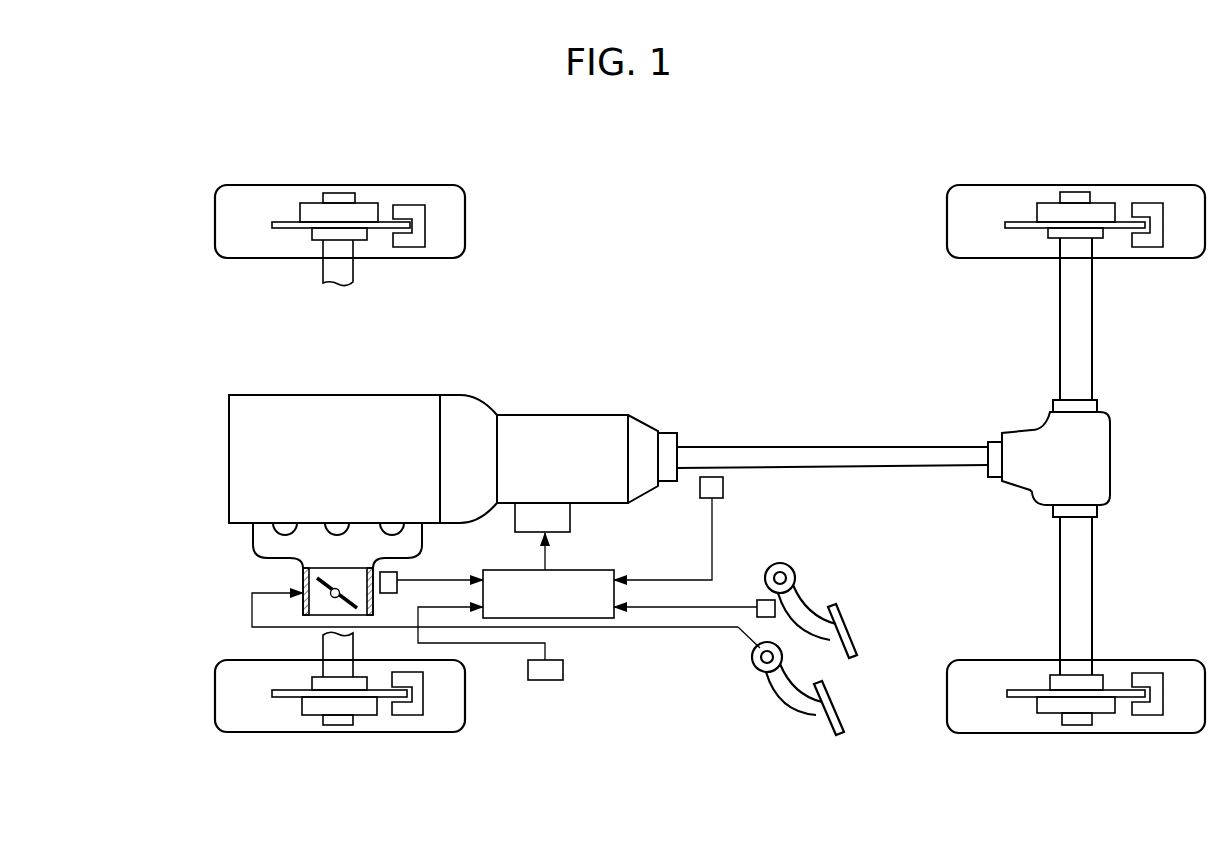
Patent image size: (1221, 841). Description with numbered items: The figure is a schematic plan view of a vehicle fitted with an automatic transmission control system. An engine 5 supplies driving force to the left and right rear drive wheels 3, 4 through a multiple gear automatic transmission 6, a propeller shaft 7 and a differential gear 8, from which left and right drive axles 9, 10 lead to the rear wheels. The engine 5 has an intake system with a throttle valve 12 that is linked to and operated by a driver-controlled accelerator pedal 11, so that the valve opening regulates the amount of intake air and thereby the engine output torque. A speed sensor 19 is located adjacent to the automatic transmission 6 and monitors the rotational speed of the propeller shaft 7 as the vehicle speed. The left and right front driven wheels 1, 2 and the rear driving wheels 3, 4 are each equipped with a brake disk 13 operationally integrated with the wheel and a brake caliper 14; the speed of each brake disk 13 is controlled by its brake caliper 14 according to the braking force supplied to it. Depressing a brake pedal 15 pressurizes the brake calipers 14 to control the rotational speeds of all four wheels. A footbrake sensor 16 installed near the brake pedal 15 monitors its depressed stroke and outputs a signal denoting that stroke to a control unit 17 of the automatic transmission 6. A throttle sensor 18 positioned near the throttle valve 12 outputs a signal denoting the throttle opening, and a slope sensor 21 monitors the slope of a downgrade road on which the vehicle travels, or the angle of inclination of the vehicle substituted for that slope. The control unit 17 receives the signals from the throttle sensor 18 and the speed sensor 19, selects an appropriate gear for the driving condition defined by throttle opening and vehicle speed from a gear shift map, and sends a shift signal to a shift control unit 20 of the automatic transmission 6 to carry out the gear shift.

The left front driven wheel 1 is at (237, 730).
The right front driven wheel 2 is at (220, 188).
The left rear drive wheel 3 is at (975, 720).
The right rear drive wheel 4 is at (975, 185).
The engine 5 is at (422, 397).
The multiple gear automatic transmission 6 is at (593, 415).
The propeller shaft 7 is at (832, 447).
The differential gear 8 is at (1093, 478).
The drive axle 9 is at (1085, 625).
The drive axle 10 is at (1093, 345).
The accelerator pedal 11 is at (790, 707).
The throttle valve 12 is at (300, 588).
The brake disk 13 is at (283, 220).
The brake caliper 14 is at (410, 205).
The brake pedal 15 is at (818, 612).
The footbrake sensor 16 is at (762, 600).
The control unit 17 is at (548, 594).
The throttle sensor 18 is at (400, 576).
The speed sensor 19 is at (723, 492).
The shift control unit 20 is at (572, 520).
The slope sensor 21 is at (548, 683).